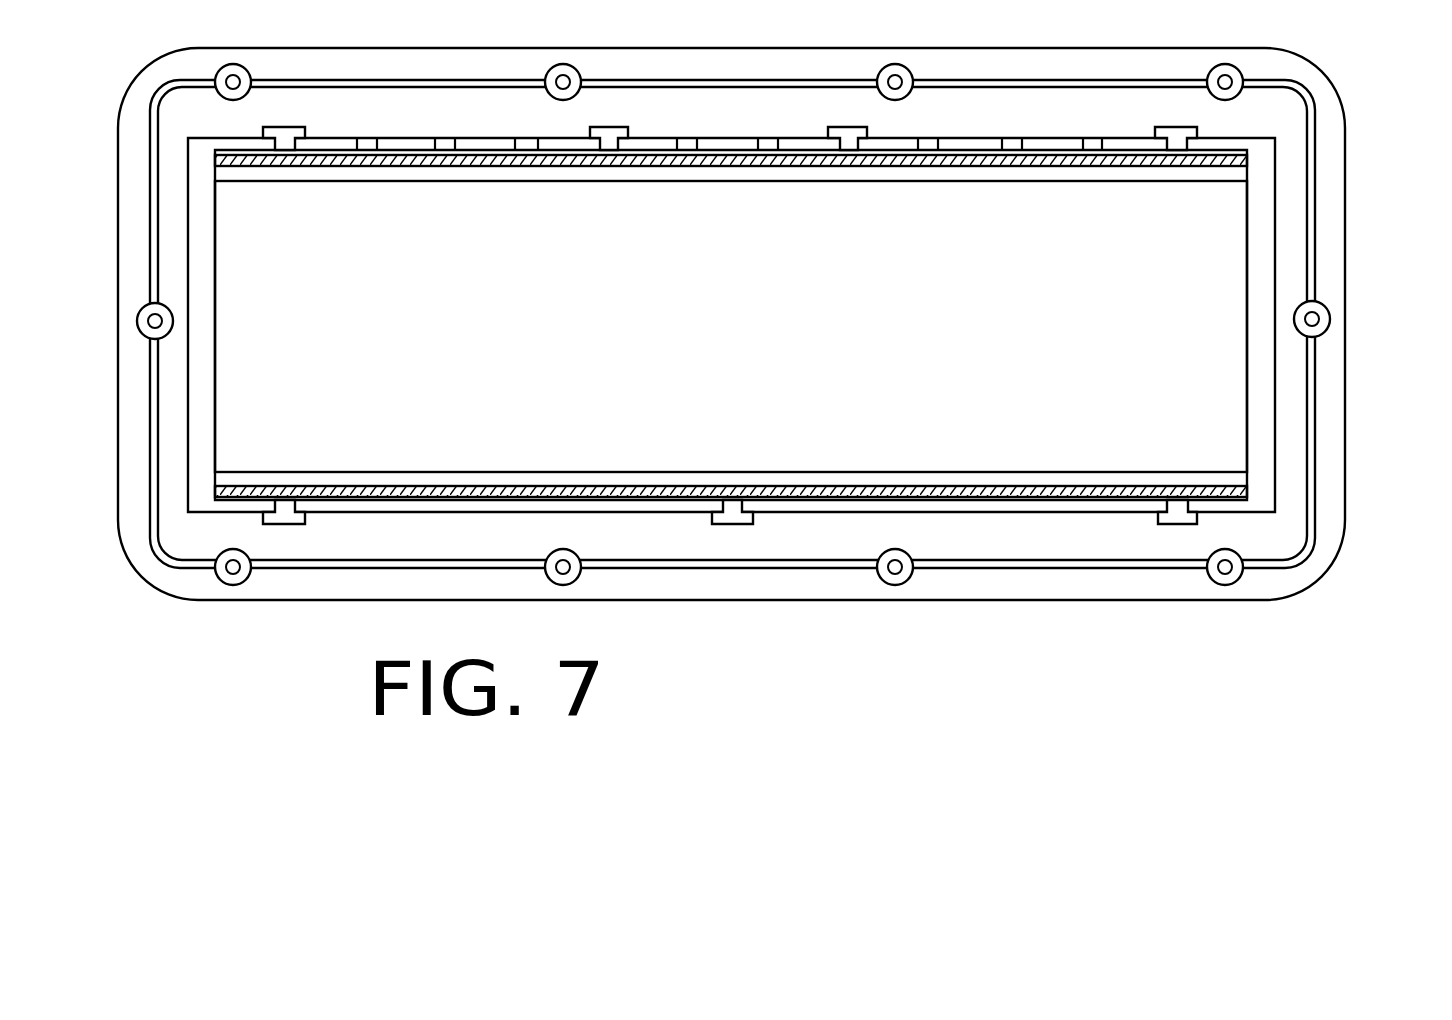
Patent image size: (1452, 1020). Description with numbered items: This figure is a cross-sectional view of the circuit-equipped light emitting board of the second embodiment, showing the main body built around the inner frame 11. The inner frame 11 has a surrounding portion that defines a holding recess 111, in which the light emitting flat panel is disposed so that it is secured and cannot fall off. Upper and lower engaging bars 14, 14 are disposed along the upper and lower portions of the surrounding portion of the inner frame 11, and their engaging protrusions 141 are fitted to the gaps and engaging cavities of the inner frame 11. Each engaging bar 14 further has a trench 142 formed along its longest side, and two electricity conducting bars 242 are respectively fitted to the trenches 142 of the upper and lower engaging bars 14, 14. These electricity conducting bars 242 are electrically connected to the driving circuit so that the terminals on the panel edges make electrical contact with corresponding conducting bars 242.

The inner frame 11 is at (1340, 267).
The holding recess 111 is at (1256, 461).
The engaging bar 14 is at (1042, 475).
The engaging protrusion 141 is at (1177, 512).
The trench 142 is at (948, 500).
The electricity conducting bar 242 is at (832, 488).